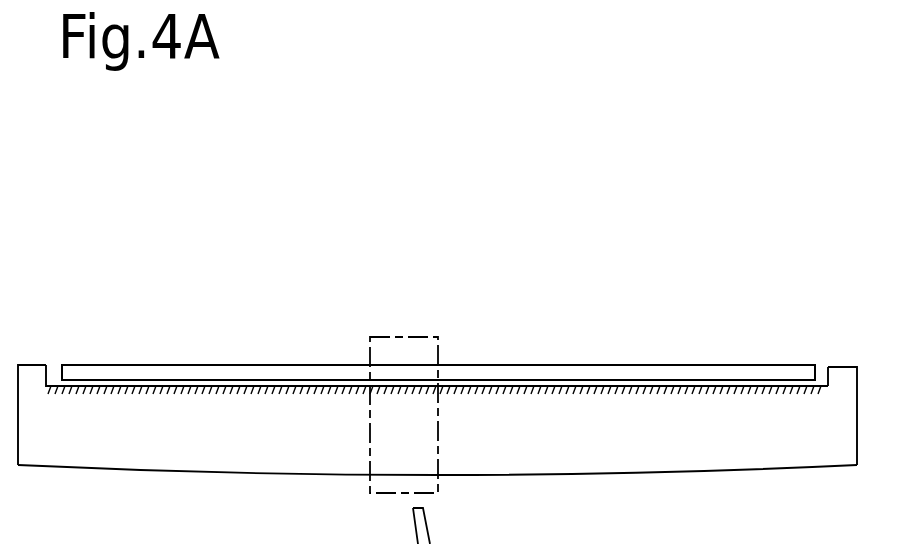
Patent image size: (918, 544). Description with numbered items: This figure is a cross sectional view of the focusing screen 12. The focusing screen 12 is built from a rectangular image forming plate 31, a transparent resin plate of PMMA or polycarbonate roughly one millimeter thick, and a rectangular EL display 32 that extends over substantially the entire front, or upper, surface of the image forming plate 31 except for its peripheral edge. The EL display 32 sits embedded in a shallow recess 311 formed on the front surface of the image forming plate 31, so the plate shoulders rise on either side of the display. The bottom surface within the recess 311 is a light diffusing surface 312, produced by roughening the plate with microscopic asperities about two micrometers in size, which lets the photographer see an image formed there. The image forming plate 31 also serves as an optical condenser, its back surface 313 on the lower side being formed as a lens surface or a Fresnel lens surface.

The focusing screen 12 is at (438, 291).
The image forming plate 31 is at (798, 452).
The recess 311 is at (817, 380).
The light diffusing surface 312 is at (648, 392).
The back surface 313 is at (180, 470).
The EL display 32 is at (503, 365).